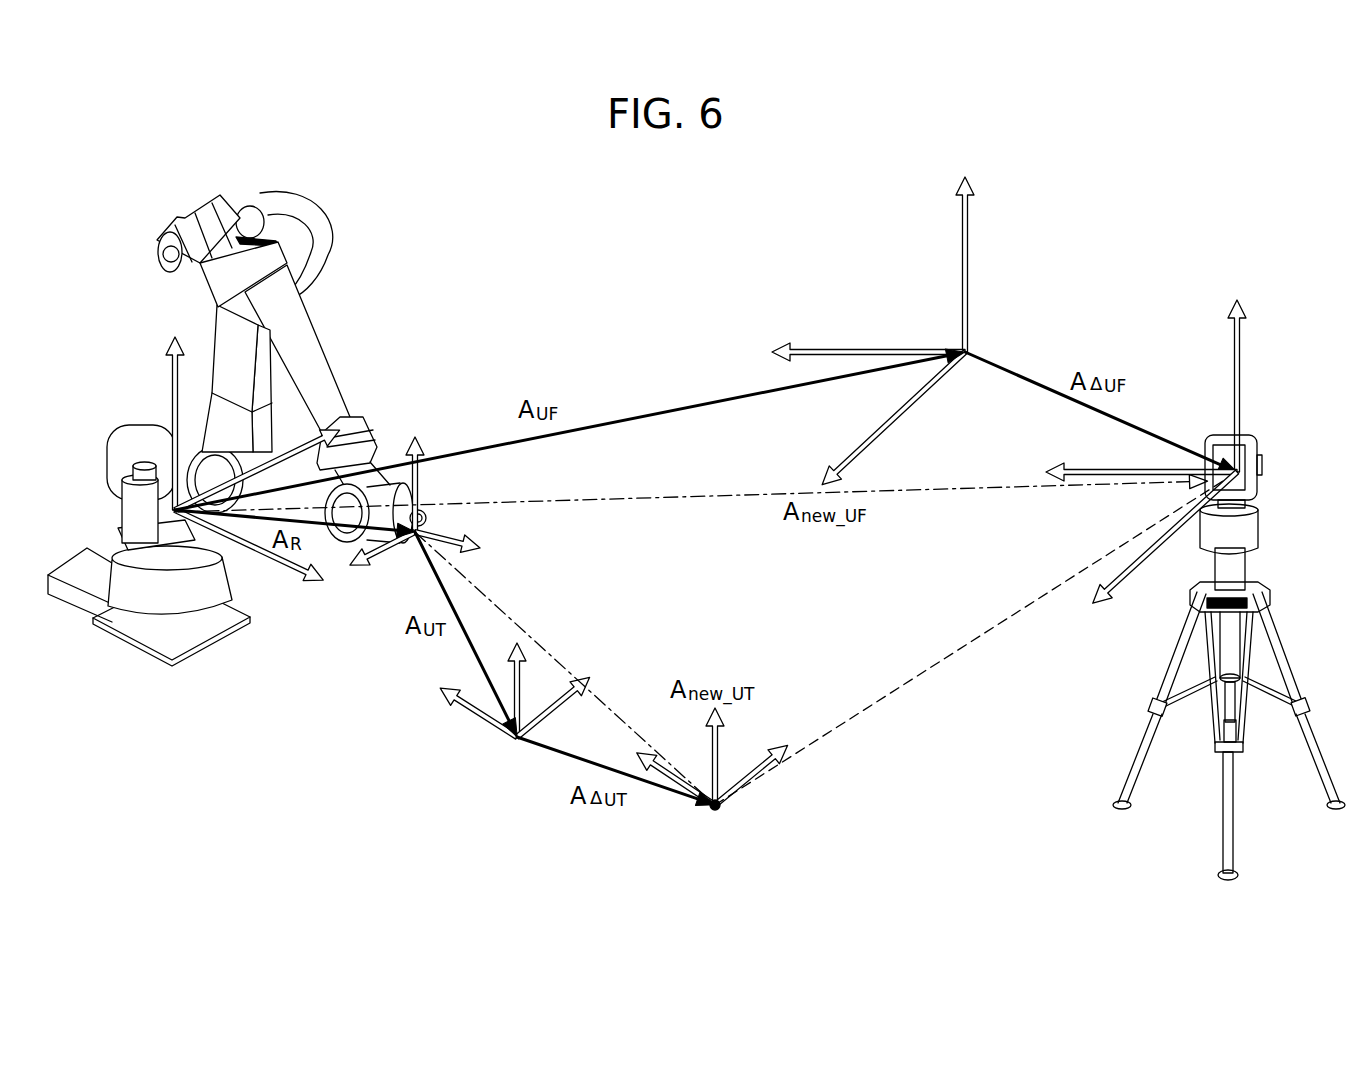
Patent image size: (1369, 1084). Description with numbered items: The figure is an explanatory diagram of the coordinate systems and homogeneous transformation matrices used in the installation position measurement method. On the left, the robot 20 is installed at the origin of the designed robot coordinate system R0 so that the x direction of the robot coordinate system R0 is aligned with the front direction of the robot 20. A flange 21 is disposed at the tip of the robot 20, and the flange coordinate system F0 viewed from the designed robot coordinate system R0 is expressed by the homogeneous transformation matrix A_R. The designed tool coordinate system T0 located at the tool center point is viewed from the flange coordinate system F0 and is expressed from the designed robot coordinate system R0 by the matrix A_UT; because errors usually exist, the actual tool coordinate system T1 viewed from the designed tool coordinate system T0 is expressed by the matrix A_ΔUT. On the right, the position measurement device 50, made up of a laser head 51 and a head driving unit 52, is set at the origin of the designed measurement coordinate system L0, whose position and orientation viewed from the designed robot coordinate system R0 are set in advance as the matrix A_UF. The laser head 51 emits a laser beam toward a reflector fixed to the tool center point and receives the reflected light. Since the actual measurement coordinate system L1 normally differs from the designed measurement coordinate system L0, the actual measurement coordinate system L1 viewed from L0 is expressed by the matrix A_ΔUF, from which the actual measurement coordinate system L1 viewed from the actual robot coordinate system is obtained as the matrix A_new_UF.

The robot 20 is at (112, 214).
The flange 21 is at (408, 545).
The position measurement device 50 is at (1285, 395).
The laser head 51 is at (1218, 433).
The head driving unit 52 is at (1262, 520).
The designed robot coordinate system R0 is at (170, 511).
The flange coordinate system F0 is at (428, 520).
The designed measurement coordinate system L0 is at (970, 351).
The actual measurement coordinate system L1 is at (1248, 470).
The designed tool coordinate system T0 is at (517, 742).
The actual tool coordinate system T1 is at (715, 812).